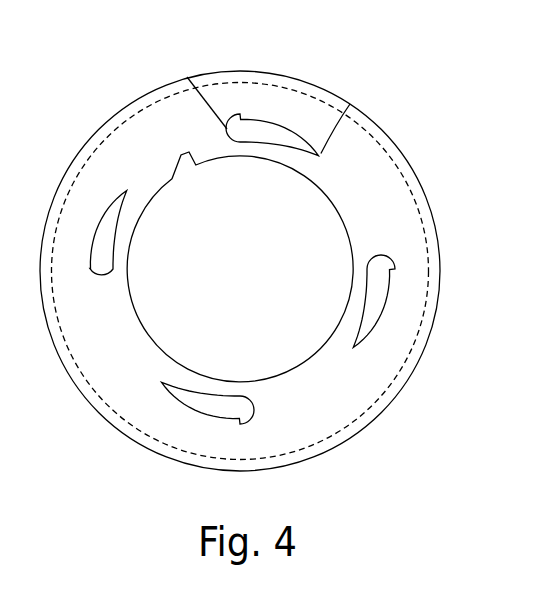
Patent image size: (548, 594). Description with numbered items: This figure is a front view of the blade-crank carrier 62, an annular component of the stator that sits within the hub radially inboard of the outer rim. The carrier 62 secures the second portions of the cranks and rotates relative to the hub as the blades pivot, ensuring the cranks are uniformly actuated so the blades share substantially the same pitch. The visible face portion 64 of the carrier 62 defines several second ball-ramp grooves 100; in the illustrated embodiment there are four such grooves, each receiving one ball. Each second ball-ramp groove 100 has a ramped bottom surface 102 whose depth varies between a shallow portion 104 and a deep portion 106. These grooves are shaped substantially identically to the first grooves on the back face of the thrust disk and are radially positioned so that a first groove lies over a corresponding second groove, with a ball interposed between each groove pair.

The blade-crank carrier 62 is at (401, 150).
The face portion 64 is at (368, 382).
The second ball-ramp groove 100 is at (259, 86).
The ramped bottom surface 102 is at (262, 132).
The shallow portion 104 is at (350, 104).
The deep portion 106 is at (187, 77).